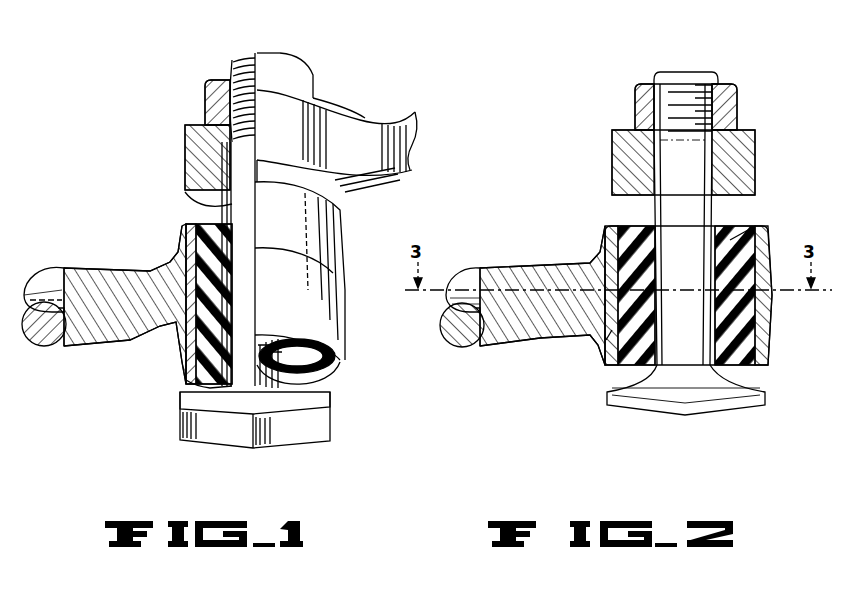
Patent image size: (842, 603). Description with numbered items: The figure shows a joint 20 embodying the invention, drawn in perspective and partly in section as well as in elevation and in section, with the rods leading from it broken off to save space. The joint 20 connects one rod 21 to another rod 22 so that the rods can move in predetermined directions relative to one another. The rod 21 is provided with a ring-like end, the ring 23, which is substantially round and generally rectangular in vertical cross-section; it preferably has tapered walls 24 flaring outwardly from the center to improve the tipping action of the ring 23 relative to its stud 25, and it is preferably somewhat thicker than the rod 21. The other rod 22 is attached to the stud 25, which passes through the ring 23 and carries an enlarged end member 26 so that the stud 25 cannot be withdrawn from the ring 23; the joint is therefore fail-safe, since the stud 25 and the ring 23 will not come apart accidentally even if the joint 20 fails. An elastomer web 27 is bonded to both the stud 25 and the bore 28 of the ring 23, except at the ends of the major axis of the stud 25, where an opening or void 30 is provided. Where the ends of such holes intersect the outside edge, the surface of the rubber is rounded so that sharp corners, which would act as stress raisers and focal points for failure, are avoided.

In FIG. 1, the joint 20 is at (163, 231).
In FIG. 2, the joint 20 is at (602, 230).
In FIG. 1, the rod 21 is at (62, 268).
In FIG. 2, the rod 21 is at (470, 350).
In FIG. 1, the rod 22 is at (416, 160).
In FIG. 2, the rod 22 is at (755, 162).
In FIG. 1, the ring 23 is at (336, 362).
In FIG. 2, the ring 23 is at (772, 300).
In FIG. 2, the tapered walls 24 is at (752, 330).
In FIG. 1, the stud 25 is at (252, 231).
In FIG. 2, the stud 25 is at (686, 279).
In FIG. 1, the enlarged end member 26 is at (300, 432).
In FIG. 2, the enlarged end member 26 is at (660, 402).
In FIG. 1, the elastomer web 27 is at (186, 366).
In FIG. 2, the elastomer web 27 is at (748, 230).
In FIG. 1, the bore 28 is at (325, 378).
In FIG. 2, the bore 28 is at (606, 340).
In FIG. 1, the opening or void 30 is at (258, 345).